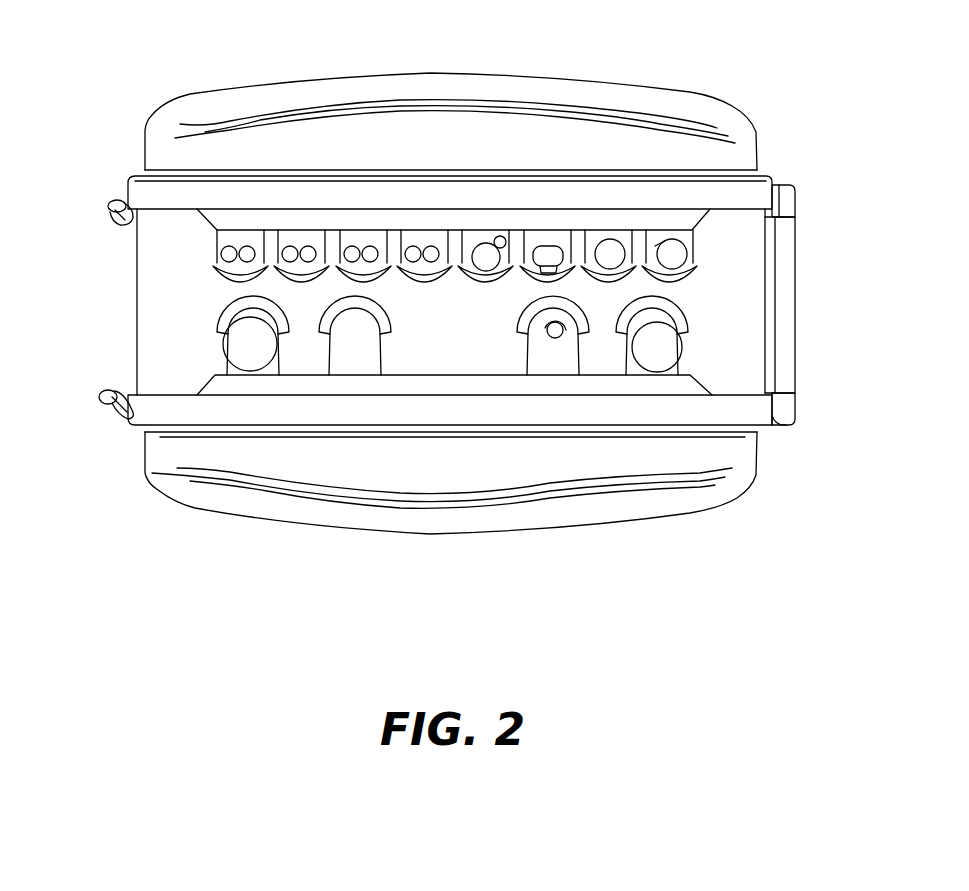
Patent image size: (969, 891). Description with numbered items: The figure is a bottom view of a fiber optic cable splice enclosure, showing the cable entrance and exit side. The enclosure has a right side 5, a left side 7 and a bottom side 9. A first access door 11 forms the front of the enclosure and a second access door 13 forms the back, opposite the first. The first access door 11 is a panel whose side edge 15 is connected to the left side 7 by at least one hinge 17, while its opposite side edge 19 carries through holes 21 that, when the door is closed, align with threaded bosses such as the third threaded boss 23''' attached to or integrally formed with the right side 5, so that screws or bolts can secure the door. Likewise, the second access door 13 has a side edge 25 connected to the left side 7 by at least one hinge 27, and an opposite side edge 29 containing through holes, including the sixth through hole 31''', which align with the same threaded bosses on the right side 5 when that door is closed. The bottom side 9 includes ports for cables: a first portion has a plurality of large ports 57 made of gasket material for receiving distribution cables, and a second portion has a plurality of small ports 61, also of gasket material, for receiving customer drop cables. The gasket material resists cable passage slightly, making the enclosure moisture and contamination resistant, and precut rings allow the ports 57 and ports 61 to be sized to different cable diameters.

The right side 5 is at (770, 298).
The left side 7 is at (137, 300).
The bottom side 9 is at (443, 327).
The first access door 11 is at (457, 76).
The second access door 13 is at (451, 533).
The side edge 15 is at (128, 180).
The hinge 17 is at (108, 215).
The opposite side edge 19 is at (778, 198).
The through holes 21 is at (792, 202).
The third threaded boss 23''' is at (833, 305).
The side edge 25 is at (137, 422).
The hinge 27 is at (100, 397).
The opposite side edge 29 is at (779, 423).
The sixth through hole 31''' is at (831, 411).
The large ports 57 is at (367, 347).
The small ports 61 is at (592, 242).